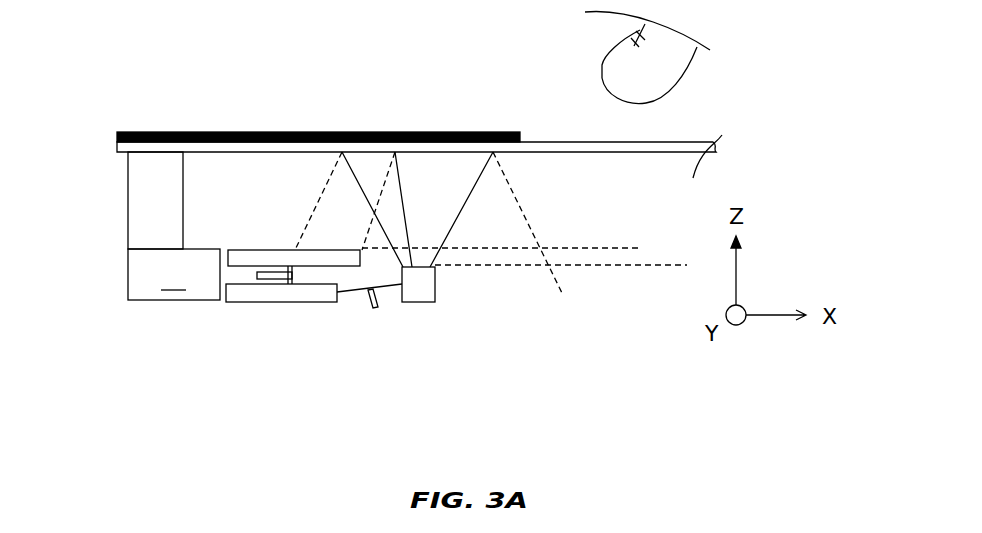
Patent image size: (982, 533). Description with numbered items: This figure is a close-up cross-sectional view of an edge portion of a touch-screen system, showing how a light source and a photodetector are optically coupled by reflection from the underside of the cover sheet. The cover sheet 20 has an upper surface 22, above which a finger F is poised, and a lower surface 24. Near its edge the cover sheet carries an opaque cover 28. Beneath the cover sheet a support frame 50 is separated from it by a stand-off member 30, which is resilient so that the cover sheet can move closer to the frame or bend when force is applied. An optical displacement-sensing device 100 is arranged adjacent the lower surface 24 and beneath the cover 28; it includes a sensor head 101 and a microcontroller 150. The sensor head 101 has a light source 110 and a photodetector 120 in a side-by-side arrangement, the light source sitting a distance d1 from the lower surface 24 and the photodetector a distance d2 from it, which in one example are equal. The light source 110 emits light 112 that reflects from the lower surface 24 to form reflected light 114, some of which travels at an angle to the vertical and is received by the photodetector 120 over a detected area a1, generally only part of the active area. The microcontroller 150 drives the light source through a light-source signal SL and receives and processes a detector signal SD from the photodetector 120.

The cover 28 is at (213, 131).
The cover sheet 20 is at (545, 141).
The upper surface 22 is at (676, 141).
The lower surface 24 is at (700, 160).
The finger F is at (634, 51).
The stand-off member 30 is at (127, 200).
The support frame 50 is at (174, 274).
The sensor head 101 is at (214, 230).
The photodetector 120 is at (243, 250).
The reflected light 114 is at (326, 186).
The light 112 is at (453, 221).
The area a1 is at (332, 244).
The light source 110 is at (423, 302).
The microcontroller 150 is at (265, 305).
The detector signal SD is at (260, 280).
The light-source signal SL is at (372, 308).
The optical displacement-sensing device 100 is at (233, 323).
The distance d1 is at (657, 154).
The distance d2 is at (623, 154).